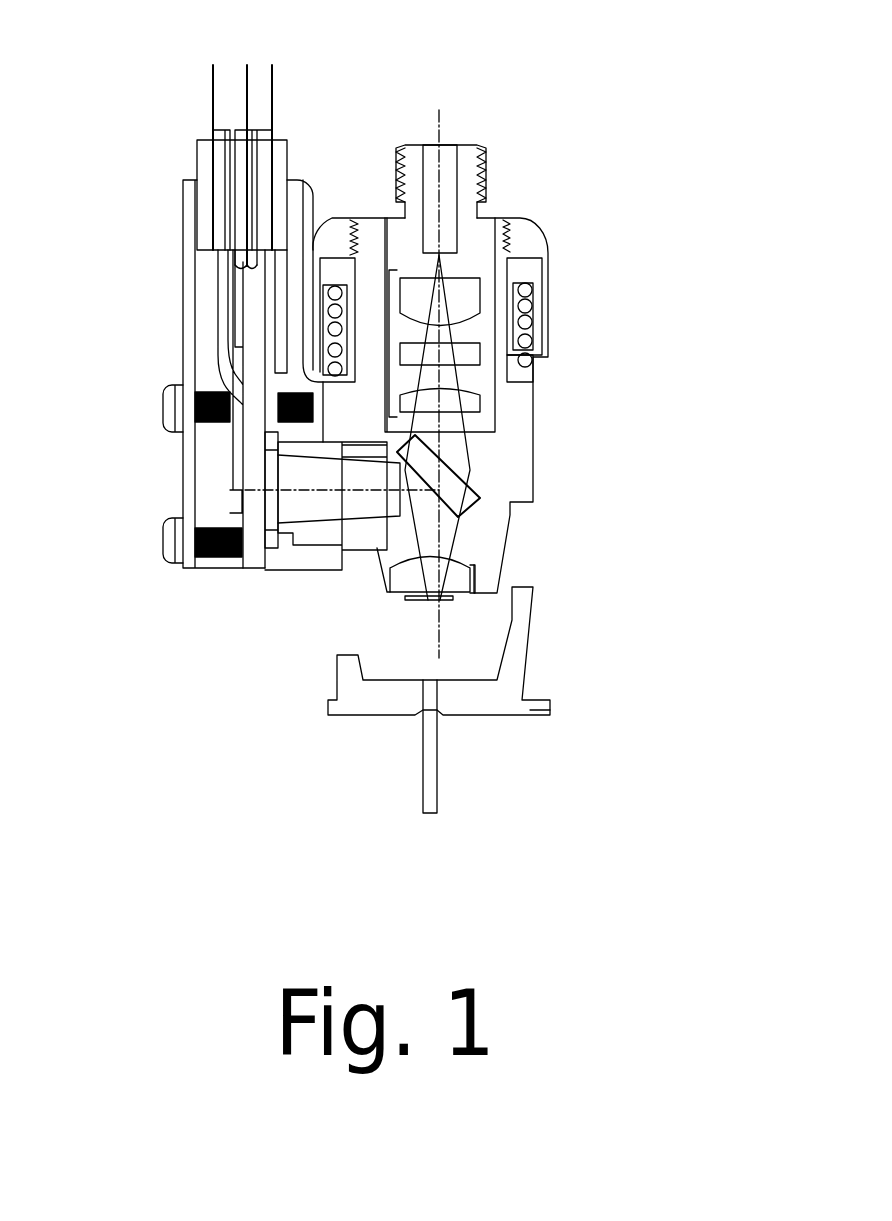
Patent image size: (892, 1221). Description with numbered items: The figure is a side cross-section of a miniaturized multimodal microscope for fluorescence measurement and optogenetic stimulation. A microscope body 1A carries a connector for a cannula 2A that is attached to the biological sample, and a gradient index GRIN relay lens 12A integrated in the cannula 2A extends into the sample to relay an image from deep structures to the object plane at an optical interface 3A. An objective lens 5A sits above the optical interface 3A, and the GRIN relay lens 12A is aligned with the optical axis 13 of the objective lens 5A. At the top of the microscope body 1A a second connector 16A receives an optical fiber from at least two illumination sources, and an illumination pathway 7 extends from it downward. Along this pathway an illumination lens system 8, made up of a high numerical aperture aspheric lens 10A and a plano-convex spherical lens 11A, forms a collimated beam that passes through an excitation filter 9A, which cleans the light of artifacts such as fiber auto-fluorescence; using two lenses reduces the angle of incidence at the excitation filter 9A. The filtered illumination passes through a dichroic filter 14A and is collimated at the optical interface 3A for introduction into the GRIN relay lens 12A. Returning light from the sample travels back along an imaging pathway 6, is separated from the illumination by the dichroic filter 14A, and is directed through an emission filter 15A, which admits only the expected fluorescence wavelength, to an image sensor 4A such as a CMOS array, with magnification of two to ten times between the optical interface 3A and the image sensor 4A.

The microscope body 1A is at (517, 440).
The cannula 2A is at (532, 710).
The optical interface 3A is at (447, 603).
The image sensor 4A is at (273, 492).
The objective lens 5A is at (468, 573).
The imaging pathway 6 is at (373, 517).
The illumination pathway 7 is at (430, 263).
The illumination lens system 8 is at (400, 345).
The excitation filter 9A is at (535, 348).
The high numerical aperture aspheric lens 10A is at (481, 282).
The plano-convex spherical lens 11A is at (481, 402).
The GRIN relay lens 12A is at (438, 753).
The optical axis 13 is at (430, 643).
The dichroic filter 14A is at (481, 491).
The emission filter 15A is at (347, 553).
The second connector 16A is at (484, 160).